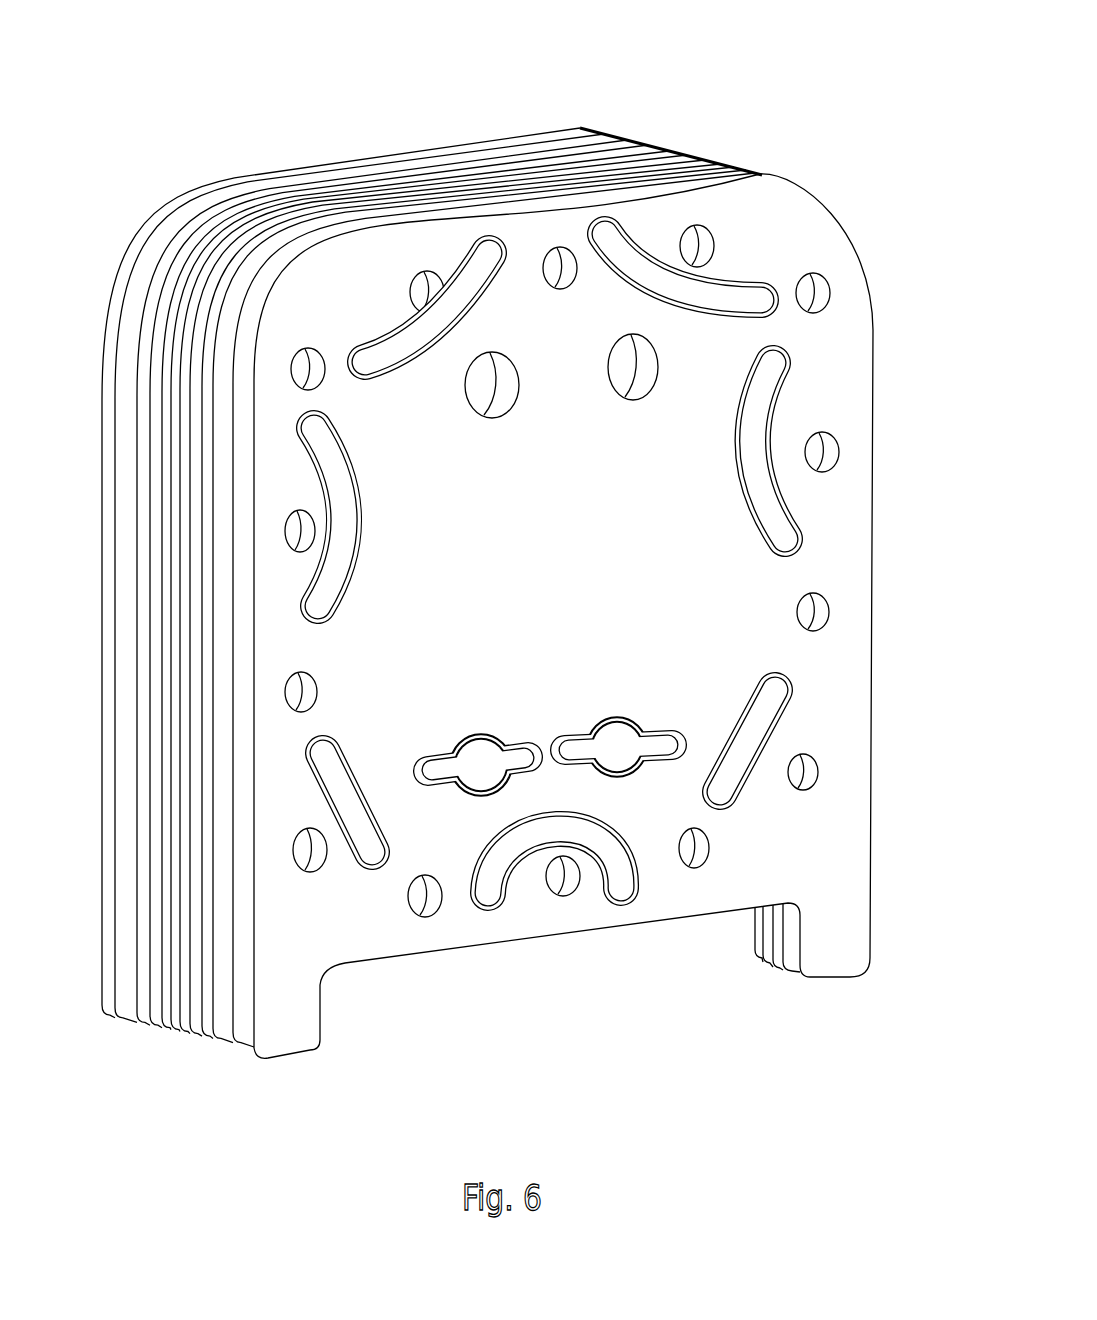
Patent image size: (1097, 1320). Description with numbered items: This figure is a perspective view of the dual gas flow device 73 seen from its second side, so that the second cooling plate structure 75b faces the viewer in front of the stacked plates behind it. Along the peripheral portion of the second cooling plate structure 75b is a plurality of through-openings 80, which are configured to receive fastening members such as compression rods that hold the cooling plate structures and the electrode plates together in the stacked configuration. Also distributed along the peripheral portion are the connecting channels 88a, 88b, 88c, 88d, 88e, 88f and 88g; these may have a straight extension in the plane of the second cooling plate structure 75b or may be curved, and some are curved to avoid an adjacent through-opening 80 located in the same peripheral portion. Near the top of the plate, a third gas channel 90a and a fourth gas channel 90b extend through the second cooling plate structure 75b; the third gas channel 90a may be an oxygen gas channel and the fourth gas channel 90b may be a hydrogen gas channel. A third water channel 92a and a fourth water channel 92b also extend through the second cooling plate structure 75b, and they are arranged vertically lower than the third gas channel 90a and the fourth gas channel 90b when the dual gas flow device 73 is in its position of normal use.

The dual gas flow device 73 is at (802, 96).
The second cooling plate structure 75b is at (295, 965).
The through-openings 80 is at (297, 358).
The connecting channel 88a is at (383, 338).
The connecting channel 88b is at (295, 427).
The connecting channel 88c is at (298, 754).
The connecting channel 88d is at (507, 890).
The connecting channel 88e is at (752, 786).
The connecting channel 88f is at (775, 474).
The connecting channel 88g is at (737, 275).
The third gas channel 90a is at (612, 350).
The fourth gas channel 90b is at (487, 353).
The third water channel 92a is at (645, 760).
The fourth water channel 92b is at (462, 772).